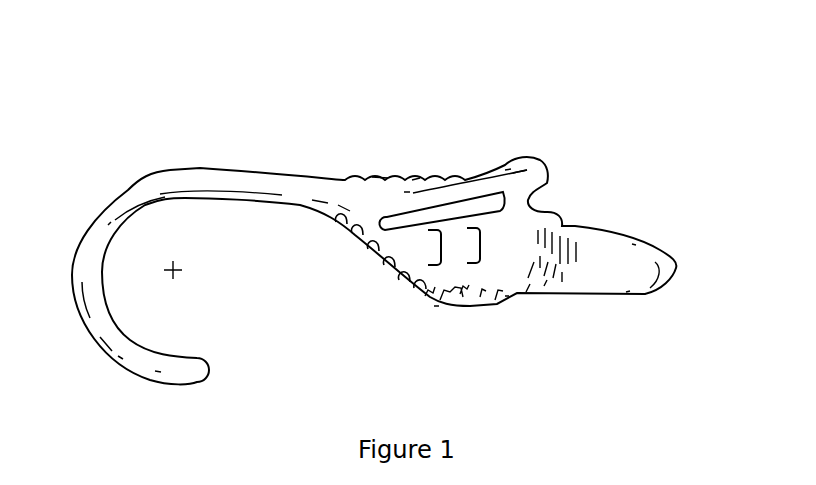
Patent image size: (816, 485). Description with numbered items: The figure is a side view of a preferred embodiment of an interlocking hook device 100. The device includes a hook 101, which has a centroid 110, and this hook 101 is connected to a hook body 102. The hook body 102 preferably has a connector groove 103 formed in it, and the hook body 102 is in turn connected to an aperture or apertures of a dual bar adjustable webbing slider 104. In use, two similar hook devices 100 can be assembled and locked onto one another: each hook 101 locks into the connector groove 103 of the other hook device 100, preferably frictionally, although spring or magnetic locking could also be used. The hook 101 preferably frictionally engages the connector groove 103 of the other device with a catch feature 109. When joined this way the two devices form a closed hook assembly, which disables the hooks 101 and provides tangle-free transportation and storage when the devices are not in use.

The interlocking hook device 100 is at (371, 126).
The hook 101 is at (142, 183).
The hook body 102 is at (458, 258).
The connector groove 103 is at (466, 205).
The dual bar adjustable webbing slider 104 is at (603, 272).
The catch feature 109 is at (551, 180).
The centroid 110 is at (175, 272).